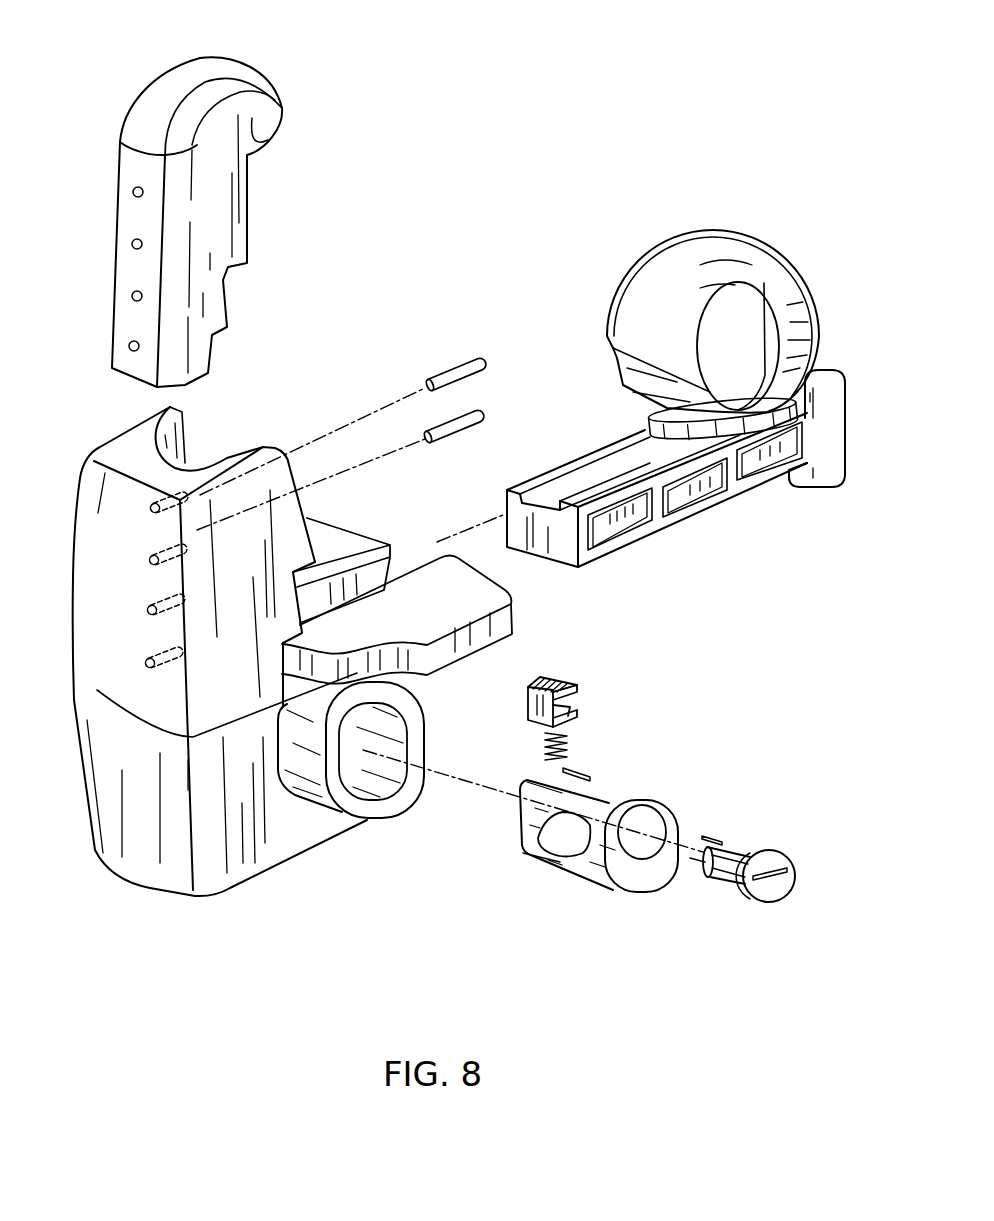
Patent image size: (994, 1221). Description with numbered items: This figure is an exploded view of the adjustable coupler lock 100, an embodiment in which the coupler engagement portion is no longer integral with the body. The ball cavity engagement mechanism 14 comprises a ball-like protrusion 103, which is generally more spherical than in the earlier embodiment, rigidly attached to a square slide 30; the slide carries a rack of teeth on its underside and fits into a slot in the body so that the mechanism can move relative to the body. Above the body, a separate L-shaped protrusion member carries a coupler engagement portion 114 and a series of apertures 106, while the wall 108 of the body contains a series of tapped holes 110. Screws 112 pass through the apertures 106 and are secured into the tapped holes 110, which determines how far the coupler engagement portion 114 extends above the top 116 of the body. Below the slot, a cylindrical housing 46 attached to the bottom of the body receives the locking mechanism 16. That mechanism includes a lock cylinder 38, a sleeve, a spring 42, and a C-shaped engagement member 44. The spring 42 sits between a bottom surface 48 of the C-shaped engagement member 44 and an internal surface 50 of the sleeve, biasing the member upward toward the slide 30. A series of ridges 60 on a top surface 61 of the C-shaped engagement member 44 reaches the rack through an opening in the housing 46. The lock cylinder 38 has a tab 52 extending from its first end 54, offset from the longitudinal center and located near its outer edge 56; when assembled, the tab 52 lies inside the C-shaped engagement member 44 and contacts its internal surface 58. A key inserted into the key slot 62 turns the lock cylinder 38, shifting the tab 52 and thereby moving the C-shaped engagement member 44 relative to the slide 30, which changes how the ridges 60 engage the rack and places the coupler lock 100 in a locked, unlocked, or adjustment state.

The adjustable coupler lock 100 is at (562, 110).
The coupler engagement portion 114 is at (262, 110).
The apertures 106 is at (131, 246).
The top of the body 116 is at (137, 457).
The wall of the body 108 is at (172, 443).
The tapped holes 110 is at (151, 562).
The screws 112 is at (462, 362).
The ball-like protrusion 103 is at (717, 253).
The square slide 30 is at (840, 453).
The ball cavity engagement mechanism 14 is at (690, 557).
The cylindrical housing 46 is at (310, 768).
The locking mechanism 16 is at (436, 910).
The ridges 60 is at (550, 682).
The top surface of the C-shaped engagement member 61 is at (573, 687).
The internal surface of the C-shaped engagement member 58 is at (568, 707).
The bottom surface of the C-shaped engagement member 48 is at (568, 723).
The spring 42 is at (543, 750).
The C-shaped engagement member 44 is at (535, 708).
The internal surface of the sleeve 50 is at (570, 866).
The tab 52 is at (720, 838).
The first end of the lock cylinder 54 is at (730, 847).
The outer edge of the lock cylinder 56 is at (687, 860).
The lock cylinder 38 is at (770, 858).
The key slot 62 is at (760, 885).